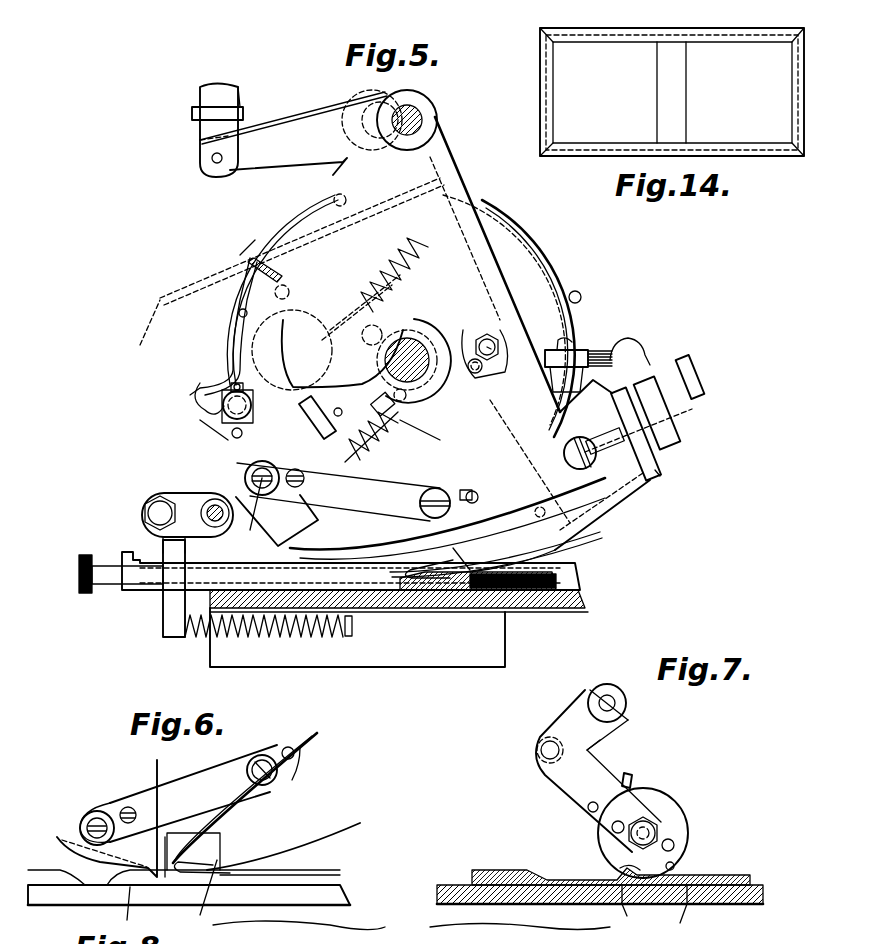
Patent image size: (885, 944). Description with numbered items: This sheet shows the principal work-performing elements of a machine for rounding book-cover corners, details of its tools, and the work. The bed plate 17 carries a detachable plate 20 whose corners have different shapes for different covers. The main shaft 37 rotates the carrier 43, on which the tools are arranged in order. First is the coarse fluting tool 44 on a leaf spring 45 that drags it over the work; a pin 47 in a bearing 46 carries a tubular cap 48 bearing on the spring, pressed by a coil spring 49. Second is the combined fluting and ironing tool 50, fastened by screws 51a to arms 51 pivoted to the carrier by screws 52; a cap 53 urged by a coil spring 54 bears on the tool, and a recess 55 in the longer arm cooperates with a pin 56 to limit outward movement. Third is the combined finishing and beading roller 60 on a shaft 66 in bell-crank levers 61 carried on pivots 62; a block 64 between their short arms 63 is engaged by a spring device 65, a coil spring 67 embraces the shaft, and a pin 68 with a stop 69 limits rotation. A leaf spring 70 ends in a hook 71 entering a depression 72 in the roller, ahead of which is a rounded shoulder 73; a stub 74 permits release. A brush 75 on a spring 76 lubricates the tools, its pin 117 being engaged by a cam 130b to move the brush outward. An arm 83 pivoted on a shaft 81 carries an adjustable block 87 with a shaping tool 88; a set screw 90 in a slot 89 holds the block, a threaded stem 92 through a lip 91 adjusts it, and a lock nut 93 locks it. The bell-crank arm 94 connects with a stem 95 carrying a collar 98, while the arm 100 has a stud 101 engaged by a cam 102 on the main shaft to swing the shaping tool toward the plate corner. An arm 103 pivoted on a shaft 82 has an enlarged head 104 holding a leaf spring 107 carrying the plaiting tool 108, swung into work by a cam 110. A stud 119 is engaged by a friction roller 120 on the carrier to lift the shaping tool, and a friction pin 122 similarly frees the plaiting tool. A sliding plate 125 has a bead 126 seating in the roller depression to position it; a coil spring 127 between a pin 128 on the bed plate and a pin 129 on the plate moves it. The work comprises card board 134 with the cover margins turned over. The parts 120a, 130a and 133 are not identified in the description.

In FIG. 5, the bed plate 17 is at (545, 608).
In FIG. 6, the bed plate 17 is at (320, 893).
In FIG. 7, the bed plate 17 is at (718, 906).
In FIG. 5, the plate 20 is at (580, 598).
In FIG. 7, the plate 20 is at (686, 924).
In FIG. 5, the main shaft 37 is at (430, 376).
In FIG. 5, the carrier 43 is at (443, 436).
In FIG. 5, the coarse fluting tool 44 is at (323, 550).
In FIG. 6, the coarse fluting tool 44 is at (205, 850).
In FIG. 5, the leaf spring 45 is at (455, 536).
In FIG. 6, the leaf spring 45 is at (258, 822).
In FIG. 5, the bearing 46 is at (434, 410).
In FIG. 5, the pin 47 is at (392, 430).
In FIG. 5, the tubular cap 48 is at (338, 492).
In FIG. 5, the coil spring 49 is at (382, 444).
In FIG. 5, the combined fluting and ironing tool 50 is at (277, 520).
In FIG. 6, the combined fluting and ironing tool 50 is at (133, 848).
In FIG. 5, the arms 51 is at (309, 472).
In FIG. 6, the arms 51 is at (178, 793).
In FIG. 5, the screws 51a is at (258, 495).
In FIG. 6, the screws 51a is at (126, 806).
In FIG. 5, the screws 52 is at (438, 488).
In FIG. 6, the screws 52 is at (258, 760).
In FIG. 5, the cap 53 is at (317, 430).
In FIG. 5, the coil spring 54 is at (407, 340).
In FIG. 5, the recess 55 is at (519, 513).
In FIG. 6, the recess 55 is at (300, 757).
In FIG. 5, the pin 56 is at (475, 495).
In FIG. 6, the pin 56 is at (295, 785).
In FIG. 5, the combined finishing and beading roller 60 is at (262, 346).
In FIG. 7, the combined finishing and beading roller 60 is at (690, 824).
In FIG. 5, the bell-crank levers 61 is at (355, 312).
In FIG. 7, the bell-crank levers 61 is at (585, 770).
In FIG. 5, the pivots 62 is at (278, 288).
In FIG. 7, the pivots 62 is at (540, 750).
In FIG. 7, the short arms 63 is at (565, 713).
In FIG. 7, the block 64 is at (615, 703).
In FIG. 5, the spring device 65 is at (295, 211).
In FIG. 5, the shaft 66 is at (232, 435).
In FIG. 7, the shaft 66 is at (660, 820).
In FIG. 5, the coil spring 67 is at (245, 478).
In FIG. 7, the coil spring 67 is at (628, 838).
In FIG. 7, the pin 68 is at (635, 779).
In FIG. 7, the stop 69 is at (588, 808).
In FIG. 5, the leaf spring 70 is at (246, 268).
In FIG. 5, the hook 71 is at (200, 400).
In FIG. 5, the depression 72 is at (198, 395).
In FIG. 7, the depression 72 is at (618, 867).
In FIG. 5, the rounded shoulder 73 is at (222, 446).
In FIG. 7, the rounded shoulder 73 is at (676, 866).
In FIG. 5, the stub 74 is at (238, 312).
In FIG. 5, the brush 75 is at (605, 340).
In FIG. 5, the spring 76 is at (538, 246).
In FIG. 5, the shaft 81 is at (422, 117).
In FIG. 5, the shaft 82 is at (368, 114).
In FIG. 5, the arm 83 is at (475, 163).
In FIG. 5, the adjustable block 87 is at (640, 520).
In FIG. 5, the shaping tool 88 is at (575, 548).
In FIG. 5, the slot 89 is at (551, 451).
In FIG. 5, the set screw 90 is at (628, 434).
In FIG. 5, the lip 91 is at (665, 435).
In FIG. 5, the threaded stem 92 is at (683, 488).
In FIG. 5, the lock nut 93 is at (702, 398).
In FIG. 5, the arm 94 is at (273, 154).
In FIG. 5, the stem 95 is at (200, 132).
In FIG. 5, the collar 98 is at (240, 105).
In FIG. 5, the arm 100 is at (340, 185).
In FIG. 5, the stud 101 is at (233, 330).
In FIG. 5, the cam 102 is at (470, 215).
In FIG. 5, the arm 103 is at (330, 112).
In FIG. 5, the enlarged head 104 is at (650, 455).
In FIG. 5, the leaf spring 107 is at (565, 576).
In FIG. 6, the leaf spring 107 is at (322, 852).
In FIG. 5, the plaiting tool 108 is at (455, 560).
In FIG. 6, the plaiting tool 108 is at (221, 896).
In FIG. 5, the cam 110 is at (130, 329).
In FIG. 5, the pin 117 is at (580, 295).
In FIG. 5, the stud 119 is at (495, 346).
In FIG. 5, the friction roller 120 is at (485, 340).
In FIG. 5, the nut 120a is at (169, 500).
In FIG. 6, the nut 120a is at (90, 820).
In FIG. 5, the friction pin 122 is at (520, 405).
In FIG. 6, the plate 125 is at (50, 855).
In FIG. 7, the plate 125 is at (495, 872).
In FIG. 6, the bead 126 is at (151, 911).
In FIG. 7, the bead 126 is at (643, 920).
In FIG. 5, the coil spring 127 is at (320, 655).
In FIG. 5, the pin 128 is at (352, 627).
In FIG. 5, the pin 129 is at (162, 608).
In FIG. 5, the hole 130a is at (150, 498).
In FIG. 5, the cam 130b is at (250, 270).
In FIG. 14, the panel 133 is at (635, 50).
In FIG. 14, the card board 134 is at (708, 62).